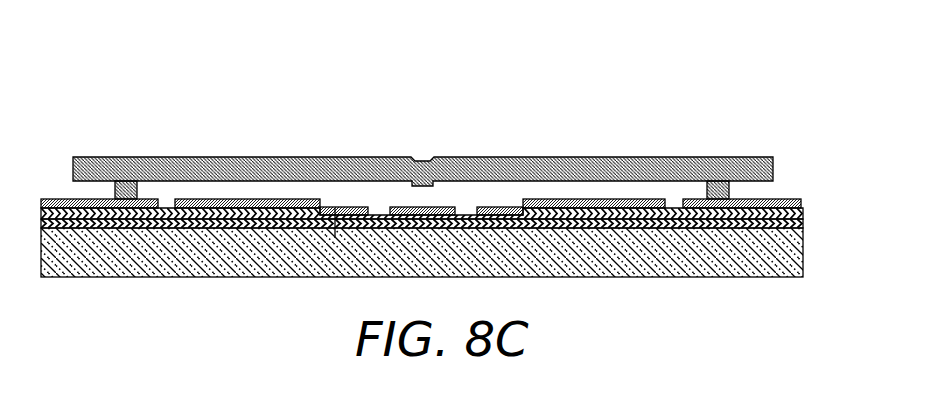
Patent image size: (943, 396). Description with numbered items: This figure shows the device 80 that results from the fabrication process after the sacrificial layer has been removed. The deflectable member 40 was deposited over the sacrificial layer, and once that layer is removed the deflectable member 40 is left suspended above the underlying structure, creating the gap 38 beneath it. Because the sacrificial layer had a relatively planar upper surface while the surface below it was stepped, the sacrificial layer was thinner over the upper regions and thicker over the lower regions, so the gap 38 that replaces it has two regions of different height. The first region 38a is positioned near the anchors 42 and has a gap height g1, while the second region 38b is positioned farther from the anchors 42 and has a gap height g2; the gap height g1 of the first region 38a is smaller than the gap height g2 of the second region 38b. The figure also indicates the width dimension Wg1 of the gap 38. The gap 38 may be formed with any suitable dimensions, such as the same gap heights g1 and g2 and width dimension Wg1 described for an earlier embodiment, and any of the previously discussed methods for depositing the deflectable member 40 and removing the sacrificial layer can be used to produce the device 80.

The device 80 is at (751, 118).
The gap 38 is at (690, 190).
The first region 38a is at (205, 190).
The second region 38b is at (368, 188).
The deflectable member 40 is at (678, 158).
The anchors 42 is at (115, 188).
The gap height g1 is at (254, 179).
The gap height g2 is at (338, 179).
The width dimension Wg1 is at (320, 292).